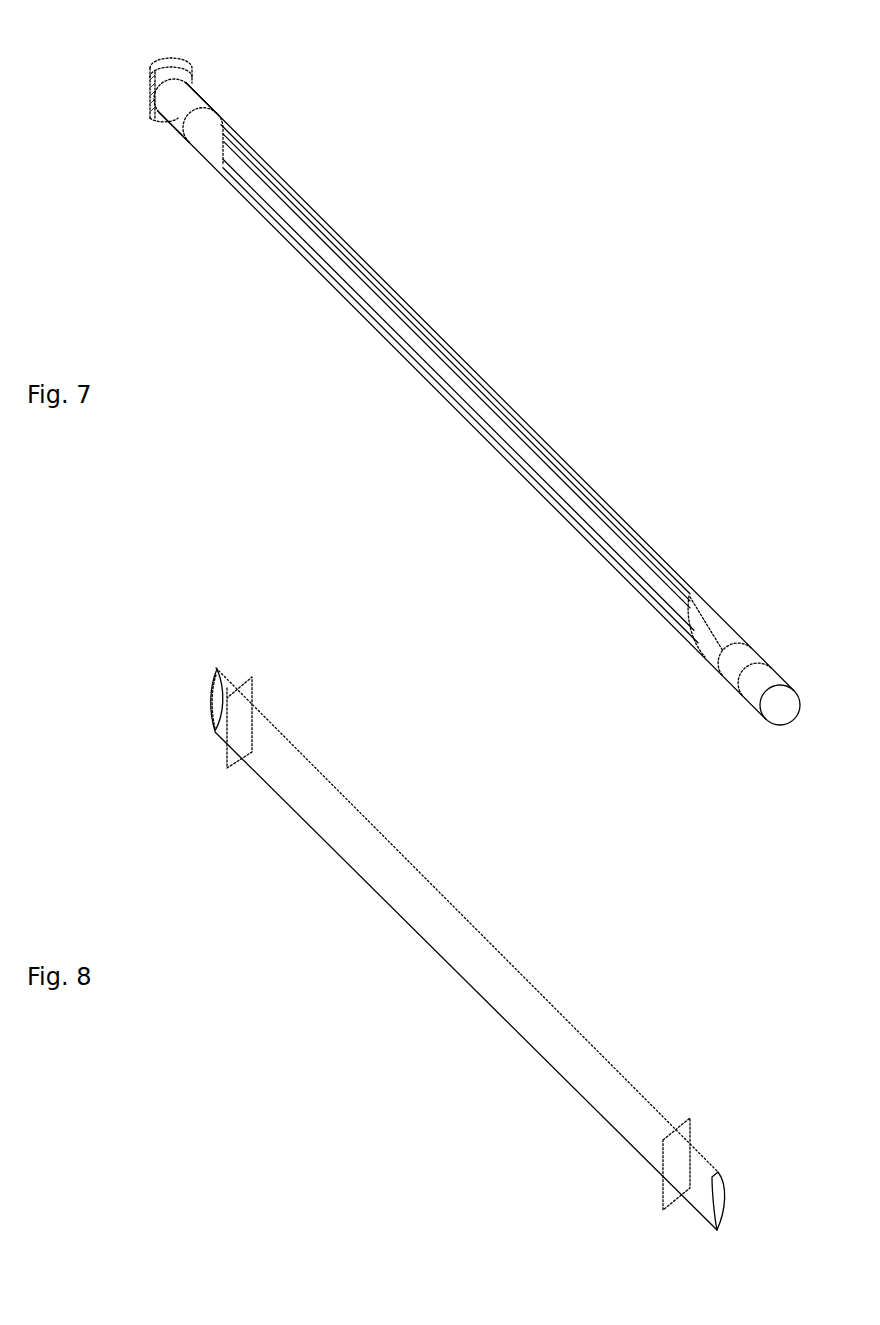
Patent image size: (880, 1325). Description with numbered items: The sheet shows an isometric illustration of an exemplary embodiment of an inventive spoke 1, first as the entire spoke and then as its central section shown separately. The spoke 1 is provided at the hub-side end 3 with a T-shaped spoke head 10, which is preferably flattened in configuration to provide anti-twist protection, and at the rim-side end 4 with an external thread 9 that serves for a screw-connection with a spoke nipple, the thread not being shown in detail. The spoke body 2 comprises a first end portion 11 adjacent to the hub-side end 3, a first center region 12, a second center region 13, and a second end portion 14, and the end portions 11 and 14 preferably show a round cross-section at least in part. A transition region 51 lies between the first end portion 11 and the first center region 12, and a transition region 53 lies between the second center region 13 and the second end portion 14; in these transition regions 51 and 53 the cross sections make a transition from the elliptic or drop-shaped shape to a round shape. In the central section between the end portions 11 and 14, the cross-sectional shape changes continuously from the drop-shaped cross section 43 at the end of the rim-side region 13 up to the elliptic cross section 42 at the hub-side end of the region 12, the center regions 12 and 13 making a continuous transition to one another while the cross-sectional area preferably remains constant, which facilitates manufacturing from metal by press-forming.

In FIG. 7, the spoke 1 is at (489, 183).
In FIG. 7, the spoke body 2 is at (455, 412).
In FIG. 8, the spoke body 2 is at (468, 998).
In FIG. 7, the hub-side end 3 is at (148, 149).
In FIG. 7, the rim-side end 4 is at (741, 720).
In FIG. 7, the external thread 9 is at (796, 691).
In FIG. 7, the spoke head 10 is at (180, 57).
In FIG. 7, the first end portion 11 is at (190, 165).
In FIG. 8, the first center region 12 is at (227, 759).
In FIG. 8, the second center region 13 is at (661, 1193).
In FIG. 7, the second end portion 14 is at (711, 687).
In FIG. 8, the elliptic cross section 42 is at (208, 700).
In FIG. 8, the drop-shaped cross section 43 is at (728, 1188).
In FIG. 7, the transition region 51 is at (222, 113).
In FIG. 7, the transition region 53 is at (727, 630).